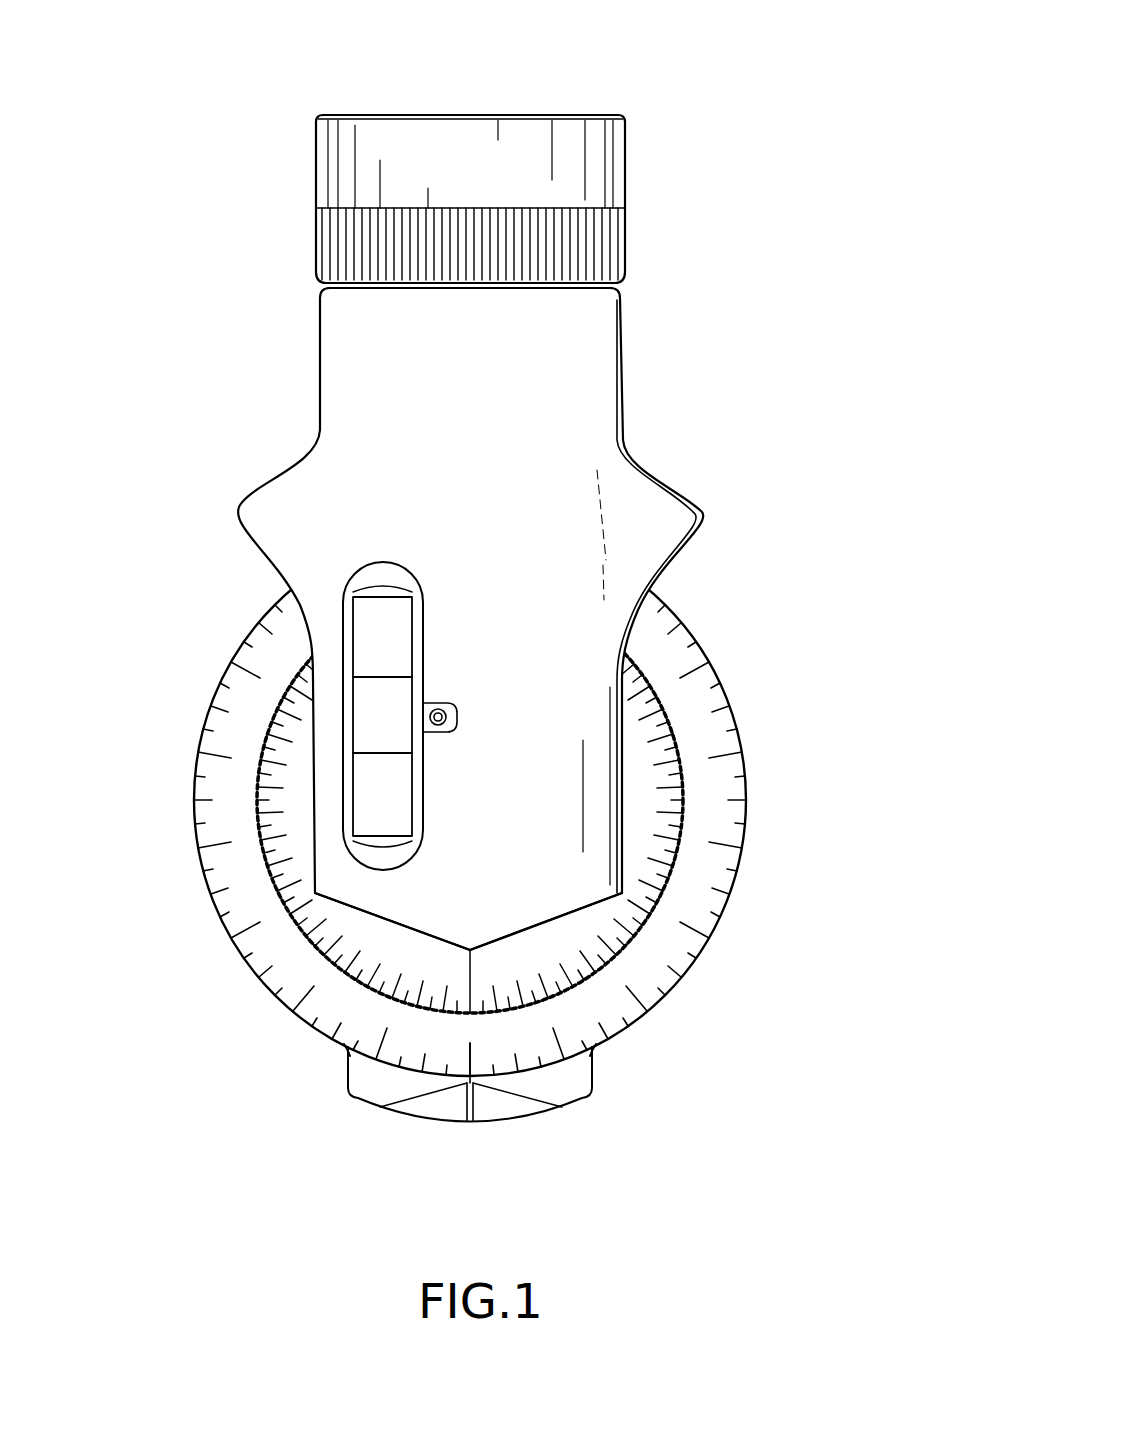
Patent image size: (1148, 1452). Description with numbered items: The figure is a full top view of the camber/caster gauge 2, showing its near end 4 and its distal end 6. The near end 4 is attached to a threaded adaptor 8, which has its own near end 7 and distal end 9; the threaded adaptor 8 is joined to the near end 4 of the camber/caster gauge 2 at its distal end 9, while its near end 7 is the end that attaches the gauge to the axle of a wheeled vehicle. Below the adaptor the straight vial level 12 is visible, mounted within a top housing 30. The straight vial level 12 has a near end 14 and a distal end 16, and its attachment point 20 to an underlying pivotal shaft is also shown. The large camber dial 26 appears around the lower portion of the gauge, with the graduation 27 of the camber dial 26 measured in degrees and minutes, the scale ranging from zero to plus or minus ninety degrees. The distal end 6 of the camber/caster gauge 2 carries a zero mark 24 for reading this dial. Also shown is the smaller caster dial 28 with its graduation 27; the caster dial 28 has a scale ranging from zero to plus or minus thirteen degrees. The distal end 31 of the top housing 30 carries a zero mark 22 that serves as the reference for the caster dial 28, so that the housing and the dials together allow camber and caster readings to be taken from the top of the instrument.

The camber/caster gauge 2 is at (497, 619).
The near end 4 is at (625, 305).
The distal end 6 is at (598, 1078).
The near end 7 is at (330, 115).
The threaded adaptor 8 is at (578, 115).
The distal end 9 is at (624, 282).
The straight vial level 12 is at (360, 723).
The near end 14 is at (378, 583).
The distal end 16 is at (388, 855).
The attachment point 20 is at (447, 718).
The zero mark 22 is at (455, 930).
The zero mark 24 is at (470, 1121).
The camber dial 26 is at (708, 744).
The graduation 27 is at (686, 668).
The caster dial 28 is at (660, 853).
The top housing 30 is at (340, 342).
The distal end 31 is at (522, 893).